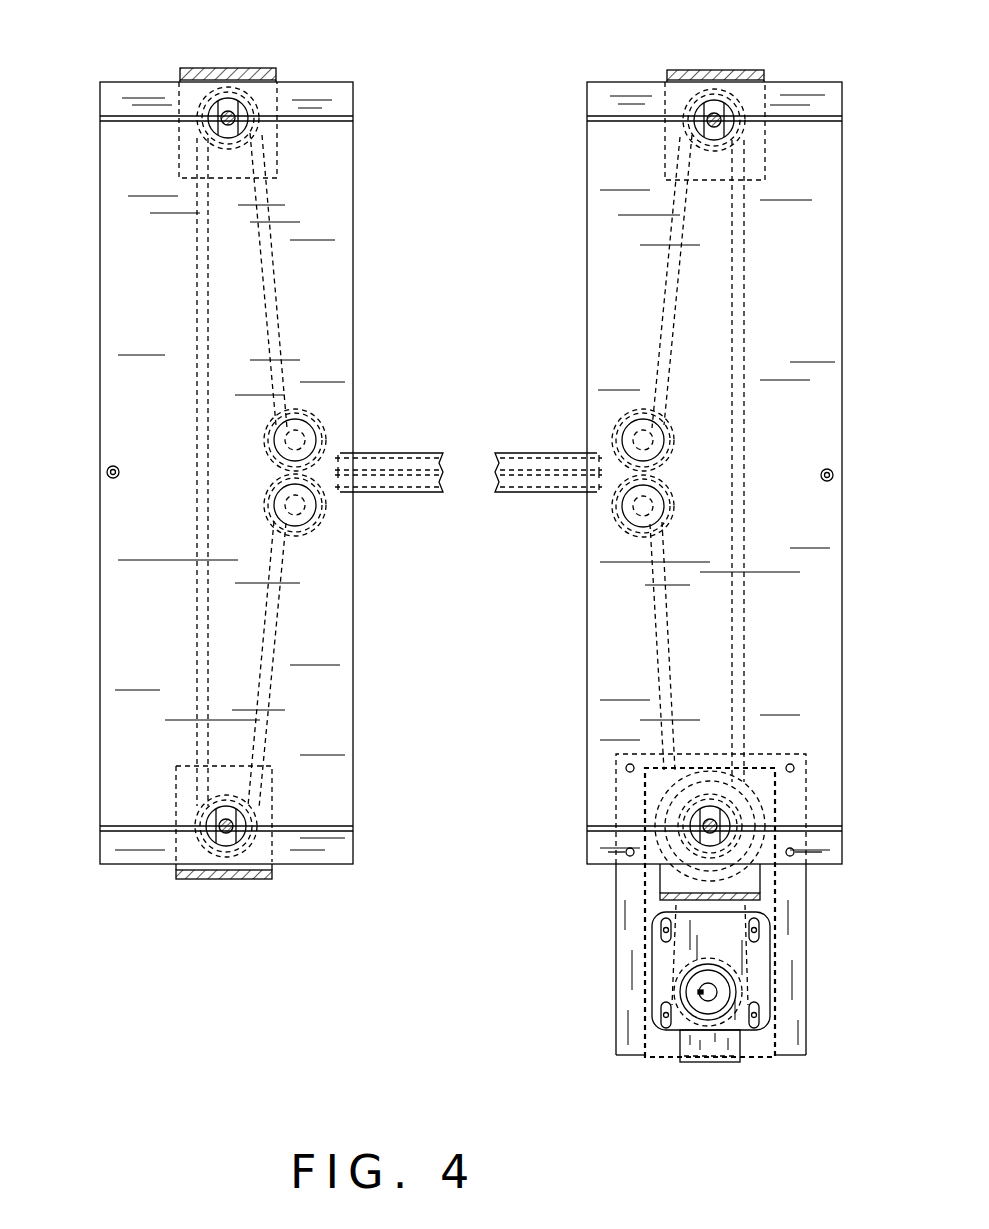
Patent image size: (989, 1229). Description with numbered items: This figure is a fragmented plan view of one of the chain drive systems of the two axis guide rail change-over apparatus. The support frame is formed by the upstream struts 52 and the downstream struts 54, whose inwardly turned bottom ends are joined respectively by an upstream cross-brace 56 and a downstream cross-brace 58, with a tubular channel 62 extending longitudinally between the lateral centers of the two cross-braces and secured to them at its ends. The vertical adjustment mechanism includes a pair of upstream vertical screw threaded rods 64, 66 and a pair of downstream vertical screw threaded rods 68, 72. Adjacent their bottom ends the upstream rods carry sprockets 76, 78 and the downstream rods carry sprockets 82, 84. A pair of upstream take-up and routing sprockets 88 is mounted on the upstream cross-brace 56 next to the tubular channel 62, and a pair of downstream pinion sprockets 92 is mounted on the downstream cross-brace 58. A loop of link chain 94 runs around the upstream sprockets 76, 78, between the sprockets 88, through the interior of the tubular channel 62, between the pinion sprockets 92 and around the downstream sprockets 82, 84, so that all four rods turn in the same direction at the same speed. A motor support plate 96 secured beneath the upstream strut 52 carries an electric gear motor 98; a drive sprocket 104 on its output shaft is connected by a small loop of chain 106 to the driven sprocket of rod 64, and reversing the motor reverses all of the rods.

The upstream struts 52 is at (693, 68).
The downstream struts 54 is at (206, 68).
The upstream cross-brace 56 is at (800, 493).
The downstream cross-brace 58 is at (140, 503).
The tubular channel 62 is at (388, 495).
The upstream vertical screw threaded rod 64 is at (722, 836).
The upstream vertical screw threaded rod 66 is at (716, 114).
The downstream vertical screw threaded rod 68 is at (226, 838).
The downstream vertical screw threaded rod 72 is at (231, 110).
The upstream sprocket 76 is at (778, 754).
The upstream sprocket 78 is at (740, 100).
The downstream sprocket 82 is at (262, 870).
The downstream sprocket 84 is at (205, 103).
The upstream take-up and routing sprockets 88 is at (628, 412).
The downstream pinion sprockets 92 is at (318, 415).
The link chain 94 is at (195, 605).
The motor support plate 96 is at (628, 1038).
The electric gear motor 98 is at (665, 975).
The drive sprocket 104 is at (755, 1060).
The loop of chain 106 is at (670, 964).